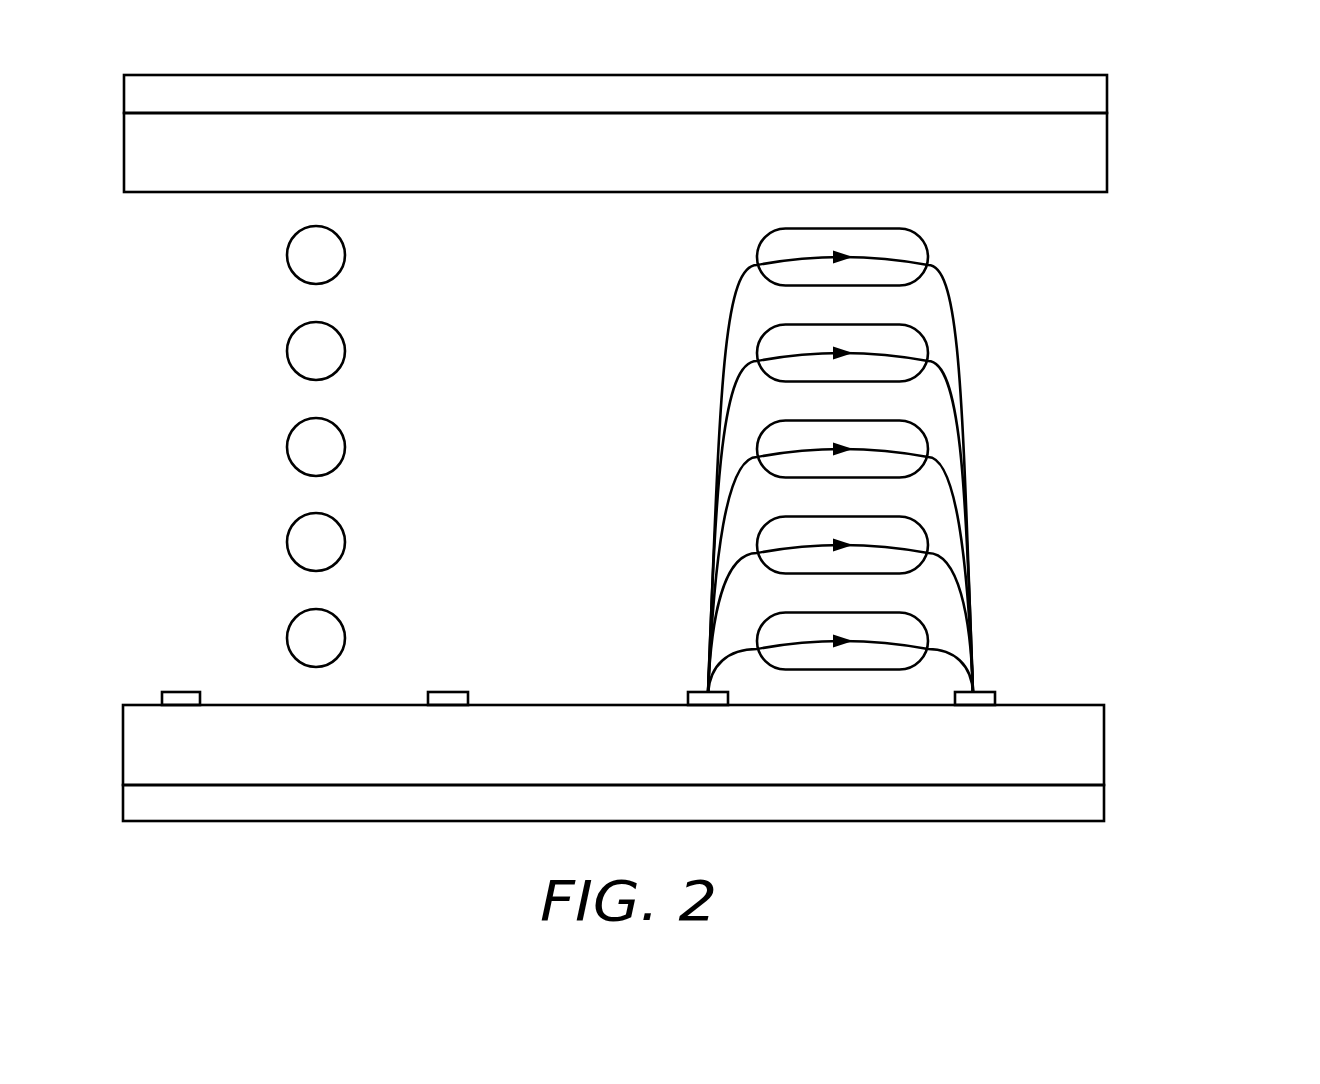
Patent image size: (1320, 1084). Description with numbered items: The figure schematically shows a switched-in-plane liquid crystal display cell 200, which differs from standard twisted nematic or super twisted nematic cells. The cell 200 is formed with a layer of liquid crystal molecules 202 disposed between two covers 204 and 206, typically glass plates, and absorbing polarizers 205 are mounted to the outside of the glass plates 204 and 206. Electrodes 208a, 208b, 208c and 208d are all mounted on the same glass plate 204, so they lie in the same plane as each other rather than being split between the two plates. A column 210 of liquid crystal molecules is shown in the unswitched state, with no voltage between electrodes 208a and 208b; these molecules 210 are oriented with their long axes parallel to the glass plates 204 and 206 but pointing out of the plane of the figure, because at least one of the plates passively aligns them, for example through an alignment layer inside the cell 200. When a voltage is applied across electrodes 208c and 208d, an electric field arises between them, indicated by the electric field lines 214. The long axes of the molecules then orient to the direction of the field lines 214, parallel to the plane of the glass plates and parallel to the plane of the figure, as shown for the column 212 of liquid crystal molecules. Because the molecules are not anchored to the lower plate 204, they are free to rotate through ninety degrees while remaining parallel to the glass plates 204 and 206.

The SIP LCD cell 200 is at (1143, 318).
The layer of liquid crystal molecules 202 is at (568, 472).
The cover 204 is at (1080, 733).
The absorbing polarizers 205 is at (1082, 92).
The cover 206 is at (1083, 157).
The electrode 208a is at (178, 692).
The electrode 208b is at (452, 692).
The electrode 208c is at (693, 692).
The electrode 208d is at (982, 692).
The column of LC molecules 210 is at (287, 353).
The column of LC molecules 212 is at (917, 422).
The electric field lines 214 is at (940, 292).